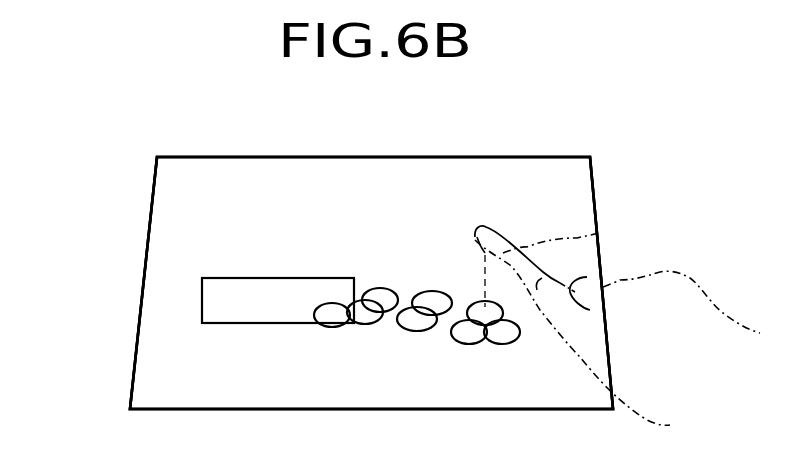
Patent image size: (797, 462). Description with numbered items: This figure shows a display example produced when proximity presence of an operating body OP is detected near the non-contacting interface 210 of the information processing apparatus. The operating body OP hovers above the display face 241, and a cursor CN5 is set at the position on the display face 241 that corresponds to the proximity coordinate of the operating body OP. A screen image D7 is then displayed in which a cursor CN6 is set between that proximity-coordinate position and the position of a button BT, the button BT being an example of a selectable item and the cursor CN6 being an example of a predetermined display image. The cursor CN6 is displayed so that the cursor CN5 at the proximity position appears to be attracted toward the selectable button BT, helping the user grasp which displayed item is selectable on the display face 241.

The non-contacting interface 210 is at (512, 172).
The screen image D7 is at (253, 200).
The display face 241 is at (382, 172).
The button BT is at (202, 302).
The cursor CN6 is at (372, 342).
The cursor CN5 is at (482, 354).
The operating body OP is at (603, 233).